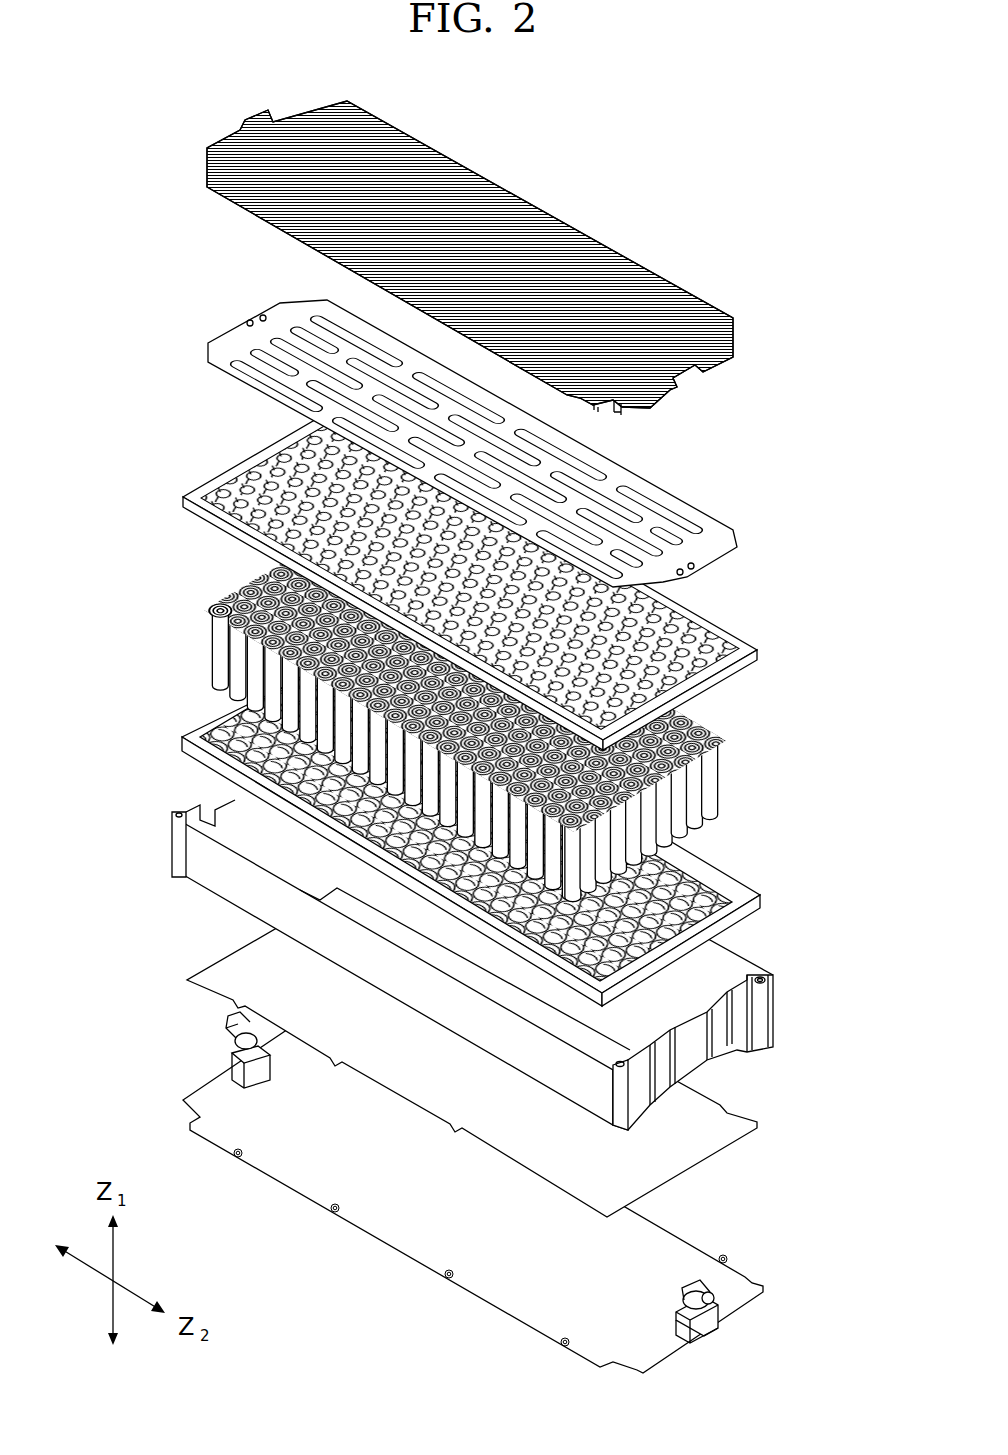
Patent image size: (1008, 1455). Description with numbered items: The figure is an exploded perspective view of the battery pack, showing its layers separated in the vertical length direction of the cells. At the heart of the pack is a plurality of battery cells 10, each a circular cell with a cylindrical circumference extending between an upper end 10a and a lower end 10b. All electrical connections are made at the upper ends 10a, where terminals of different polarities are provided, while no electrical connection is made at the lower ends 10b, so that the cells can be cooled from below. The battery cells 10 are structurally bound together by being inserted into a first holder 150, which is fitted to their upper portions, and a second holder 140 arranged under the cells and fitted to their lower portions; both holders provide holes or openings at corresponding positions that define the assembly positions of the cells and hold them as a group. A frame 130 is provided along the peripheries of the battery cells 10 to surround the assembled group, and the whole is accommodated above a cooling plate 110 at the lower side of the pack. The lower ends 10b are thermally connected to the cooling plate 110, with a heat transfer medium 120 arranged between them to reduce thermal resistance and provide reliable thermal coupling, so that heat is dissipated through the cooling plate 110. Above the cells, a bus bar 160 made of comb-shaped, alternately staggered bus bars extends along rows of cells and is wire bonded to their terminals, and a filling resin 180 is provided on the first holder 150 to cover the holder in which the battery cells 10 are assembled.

The battery cells 10 is at (478, 710).
The upper end 10a is at (192, 604).
The lower end 10b is at (192, 674).
The cooling plate 110 is at (766, 1287).
The heat transfer medium 120 is at (768, 1128).
The frame 130 is at (794, 1013).
The second holder 140 is at (765, 900).
The first holder 150 is at (772, 628).
The bus bar 160 is at (762, 528).
The filling resin 180 is at (764, 343).